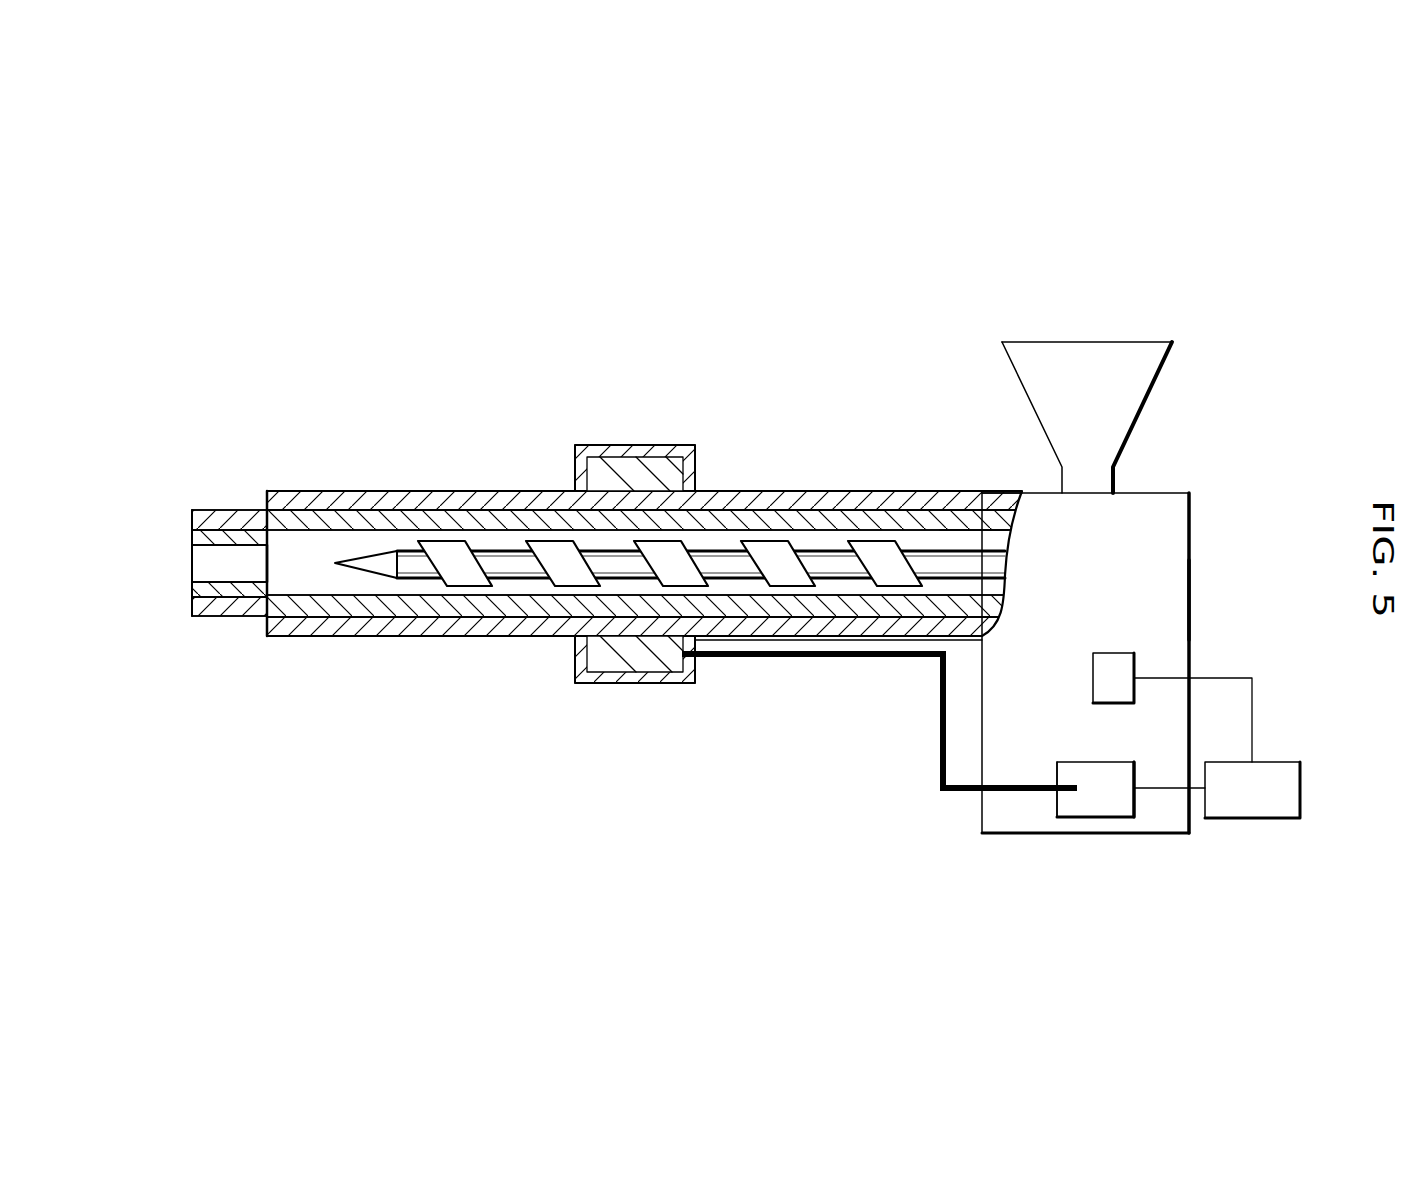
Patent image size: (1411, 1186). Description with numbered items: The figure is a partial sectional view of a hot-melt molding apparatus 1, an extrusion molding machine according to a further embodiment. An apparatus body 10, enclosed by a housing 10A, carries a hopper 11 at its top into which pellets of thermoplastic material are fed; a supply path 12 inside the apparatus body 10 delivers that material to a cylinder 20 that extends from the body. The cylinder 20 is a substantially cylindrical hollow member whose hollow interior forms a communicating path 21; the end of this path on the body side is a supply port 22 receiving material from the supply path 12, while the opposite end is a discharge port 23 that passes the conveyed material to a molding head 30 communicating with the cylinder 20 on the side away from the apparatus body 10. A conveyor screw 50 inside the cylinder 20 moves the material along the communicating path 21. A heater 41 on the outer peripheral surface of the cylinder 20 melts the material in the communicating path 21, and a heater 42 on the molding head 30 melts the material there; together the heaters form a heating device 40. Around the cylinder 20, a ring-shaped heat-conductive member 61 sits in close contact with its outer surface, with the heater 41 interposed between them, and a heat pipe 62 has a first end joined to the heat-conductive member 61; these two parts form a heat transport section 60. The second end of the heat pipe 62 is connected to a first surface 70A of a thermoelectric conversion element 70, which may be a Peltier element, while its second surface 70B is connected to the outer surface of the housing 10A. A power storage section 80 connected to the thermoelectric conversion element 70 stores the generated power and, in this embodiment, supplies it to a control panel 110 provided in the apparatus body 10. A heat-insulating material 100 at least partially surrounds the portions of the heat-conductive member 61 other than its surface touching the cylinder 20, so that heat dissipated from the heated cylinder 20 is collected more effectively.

The hot-melt molding apparatus 1 is at (1293, 277).
The apparatus body 10 is at (1177, 525).
The housing 10A is at (1167, 600).
The hopper 11 is at (1123, 393).
The supply path 12 is at (997, 540).
The cylinder 20 is at (476, 507).
The communicating path 21 is at (800, 540).
The supply port 22 is at (982, 541).
The discharge port 23 is at (267, 567).
The molding head 30 is at (205, 563).
The heating device 40 is at (343, 376).
The heater 41 is at (323, 502).
The heater 42 is at (243, 510).
The conveyor screw 50 is at (513, 563).
The heat transport section 60 is at (717, 772).
The heat-conductive member 61 is at (643, 648).
The heat pipe 62 is at (745, 658).
The thermoelectric conversion element 70 is at (1089, 802).
The first surface 70A is at (1068, 807).
The second surface 70B is at (1113, 802).
The power storage section 80 is at (1255, 807).
The heat-insulating material 100 is at (645, 444).
The control panel 110 is at (1135, 667).